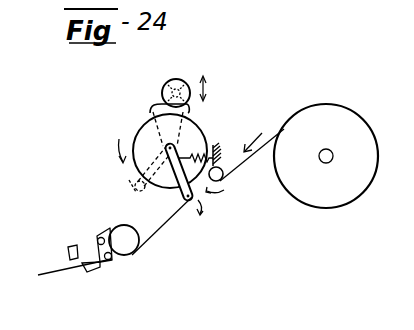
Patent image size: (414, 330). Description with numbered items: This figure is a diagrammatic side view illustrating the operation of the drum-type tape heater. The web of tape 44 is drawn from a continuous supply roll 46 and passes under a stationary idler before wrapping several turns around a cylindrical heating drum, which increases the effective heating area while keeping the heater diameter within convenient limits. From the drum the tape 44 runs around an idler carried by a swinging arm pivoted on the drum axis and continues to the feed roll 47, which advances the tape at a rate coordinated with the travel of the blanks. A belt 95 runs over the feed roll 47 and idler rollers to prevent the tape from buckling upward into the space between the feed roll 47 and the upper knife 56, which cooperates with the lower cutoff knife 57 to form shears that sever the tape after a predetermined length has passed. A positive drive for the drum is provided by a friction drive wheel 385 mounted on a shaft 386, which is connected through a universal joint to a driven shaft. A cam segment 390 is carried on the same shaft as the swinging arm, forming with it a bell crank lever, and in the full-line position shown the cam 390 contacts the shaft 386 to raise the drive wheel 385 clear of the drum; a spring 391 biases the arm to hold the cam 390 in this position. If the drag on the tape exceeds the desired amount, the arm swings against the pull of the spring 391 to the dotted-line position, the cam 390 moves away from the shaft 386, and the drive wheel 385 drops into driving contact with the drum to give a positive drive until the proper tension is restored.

The web of tape 44 is at (158, 232).
The supply roll 46 is at (354, 122).
The feed roll 47 is at (125, 246).
The upper knife 56 is at (68, 248).
The cutoff knife 57 is at (88, 272).
The belt 95 is at (107, 230).
The friction drive wheel 385 is at (166, 83).
The shaft 386 is at (178, 91).
The cam segment 390 is at (155, 108).
The spring 391 is at (199, 137).